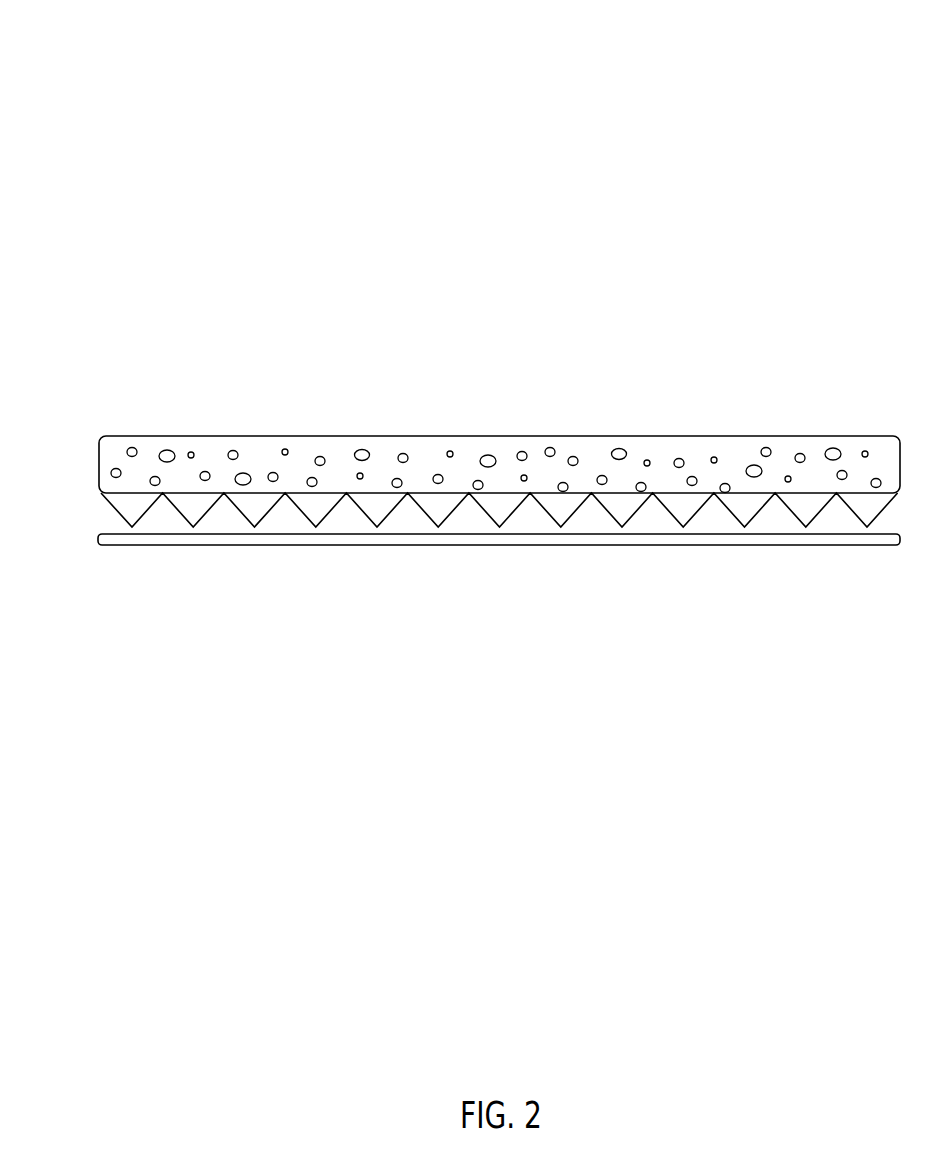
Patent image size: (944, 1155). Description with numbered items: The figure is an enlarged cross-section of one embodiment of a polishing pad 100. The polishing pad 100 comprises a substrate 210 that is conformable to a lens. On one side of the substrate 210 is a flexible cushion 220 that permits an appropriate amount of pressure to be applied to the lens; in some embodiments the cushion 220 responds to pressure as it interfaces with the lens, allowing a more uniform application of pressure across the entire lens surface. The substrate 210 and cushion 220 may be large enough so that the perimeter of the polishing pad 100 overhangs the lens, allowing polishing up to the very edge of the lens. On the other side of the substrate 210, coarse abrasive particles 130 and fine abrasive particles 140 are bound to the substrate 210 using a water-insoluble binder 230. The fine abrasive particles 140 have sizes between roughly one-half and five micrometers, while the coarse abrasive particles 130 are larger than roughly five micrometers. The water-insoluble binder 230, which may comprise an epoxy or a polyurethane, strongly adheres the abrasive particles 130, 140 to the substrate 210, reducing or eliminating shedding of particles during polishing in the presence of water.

The polishing pad 100 is at (170, 114).
The coarse abrasive particles 130 is at (364, 451).
The fine abrasive particles 140 is at (647, 460).
The substrate 210 is at (112, 510).
The cushion 220 is at (775, 545).
The water-insoluble binder 230 is at (790, 437).